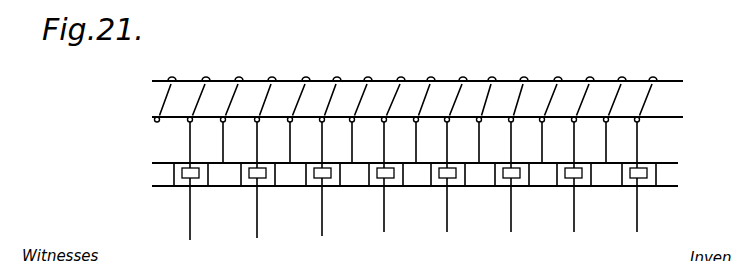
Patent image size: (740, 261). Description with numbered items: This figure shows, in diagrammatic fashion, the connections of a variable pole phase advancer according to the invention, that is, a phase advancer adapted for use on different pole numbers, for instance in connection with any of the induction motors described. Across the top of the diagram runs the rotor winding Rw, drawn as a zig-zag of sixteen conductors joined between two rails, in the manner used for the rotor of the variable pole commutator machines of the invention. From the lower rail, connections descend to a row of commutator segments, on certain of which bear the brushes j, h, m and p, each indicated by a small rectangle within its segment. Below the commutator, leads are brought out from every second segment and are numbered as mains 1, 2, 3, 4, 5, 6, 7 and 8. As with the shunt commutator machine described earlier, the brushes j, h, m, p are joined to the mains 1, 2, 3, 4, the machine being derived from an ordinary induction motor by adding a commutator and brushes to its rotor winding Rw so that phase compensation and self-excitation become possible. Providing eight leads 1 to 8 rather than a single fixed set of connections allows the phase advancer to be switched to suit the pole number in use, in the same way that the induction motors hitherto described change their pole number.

The rotor winding Rw is at (396, 96).
The brush j is at (188, 180).
The brush h is at (256, 180).
The brush m is at (321, 180).
The brush p is at (387, 180).
The main 1 is at (195, 217).
The main 2 is at (261, 216).
The main 3 is at (324, 214).
The main 4 is at (384, 212).
The main 5 is at (447, 207).
The main 6 is at (511, 207).
The main 7 is at (573, 208).
The main 8 is at (638, 207).